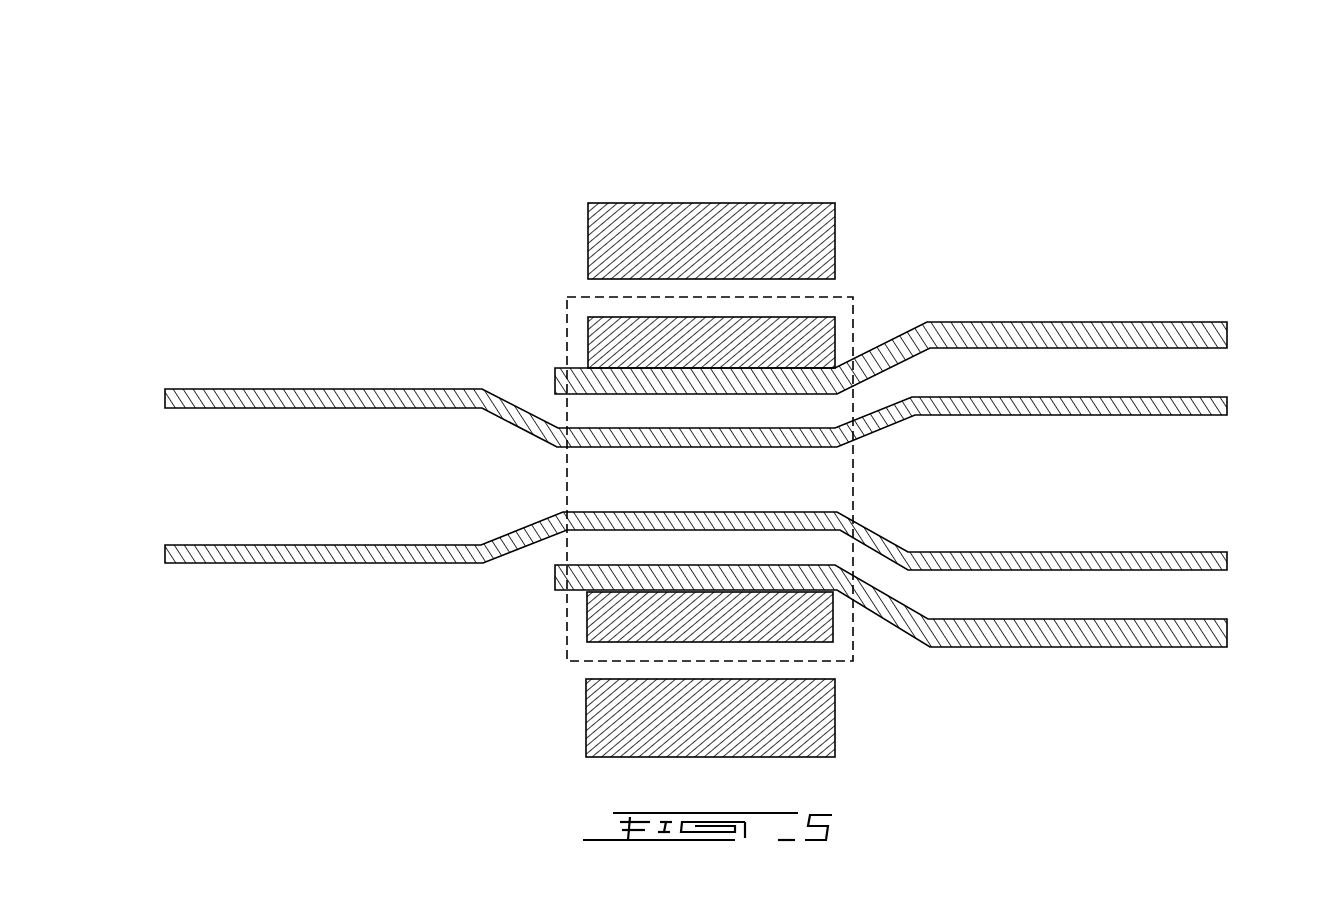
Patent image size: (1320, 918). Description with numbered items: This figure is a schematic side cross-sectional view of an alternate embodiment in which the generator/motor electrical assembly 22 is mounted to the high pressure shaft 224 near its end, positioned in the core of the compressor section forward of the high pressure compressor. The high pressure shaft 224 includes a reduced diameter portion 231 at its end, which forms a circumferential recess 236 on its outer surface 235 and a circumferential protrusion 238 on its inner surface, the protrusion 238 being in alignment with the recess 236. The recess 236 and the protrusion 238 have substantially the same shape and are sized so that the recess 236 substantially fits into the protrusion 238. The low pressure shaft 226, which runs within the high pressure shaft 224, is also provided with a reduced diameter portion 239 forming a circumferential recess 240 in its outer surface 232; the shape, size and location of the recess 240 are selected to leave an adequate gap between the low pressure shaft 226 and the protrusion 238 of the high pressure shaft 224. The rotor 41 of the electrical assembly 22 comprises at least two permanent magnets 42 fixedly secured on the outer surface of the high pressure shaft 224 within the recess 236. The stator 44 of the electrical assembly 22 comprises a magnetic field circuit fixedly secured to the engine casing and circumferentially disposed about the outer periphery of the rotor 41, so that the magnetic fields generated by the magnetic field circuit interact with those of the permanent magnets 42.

The electrical assembly 22 is at (633, 170).
The stator 44 is at (745, 227).
The rotor 41 is at (858, 294).
The permanent magnets 42 is at (610, 617).
The high pressure shaft 224 is at (1077, 334).
The low pressure shaft 226 is at (1178, 403).
The reduced diameter portion 231 is at (868, 347).
The outer surface 232 is at (1083, 573).
The outer surface 235 is at (278, 385).
The circumferential recess 236 is at (583, 366).
The circumferential protrusion 238 is at (620, 395).
The reduced diameter portion 239 is at (883, 558).
The circumferential recess 240 is at (607, 530).